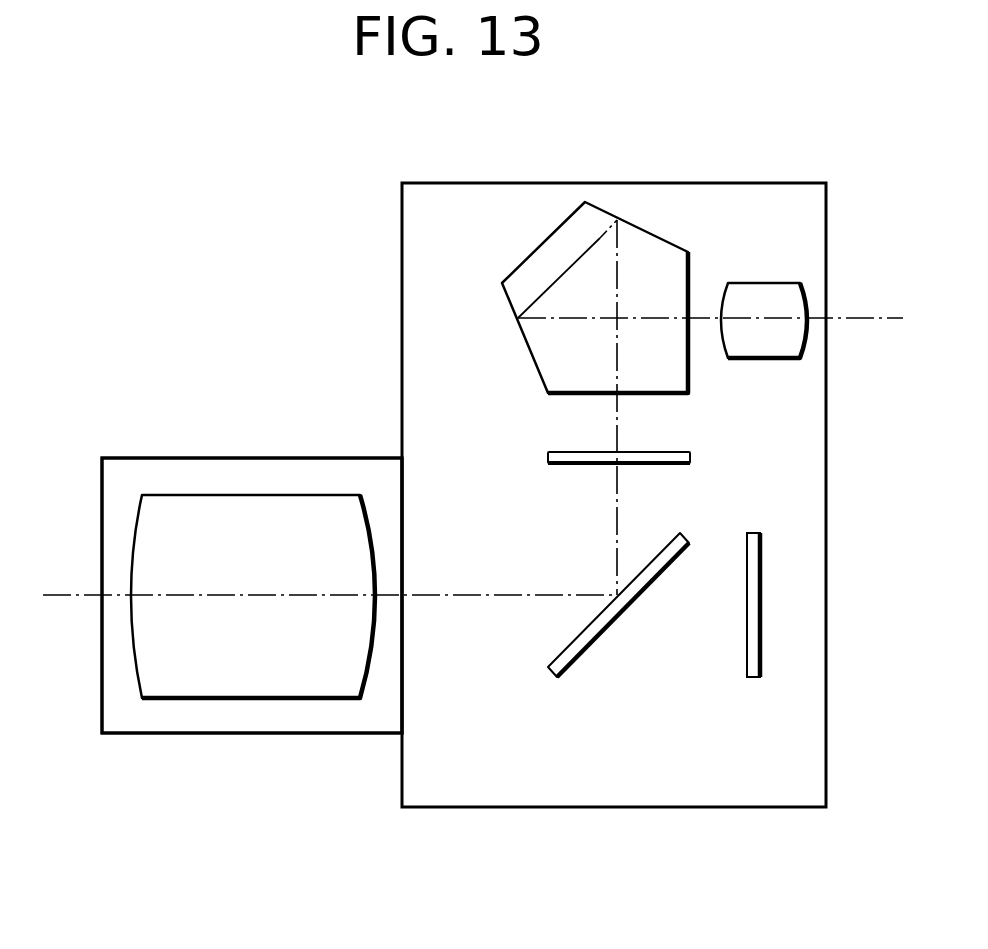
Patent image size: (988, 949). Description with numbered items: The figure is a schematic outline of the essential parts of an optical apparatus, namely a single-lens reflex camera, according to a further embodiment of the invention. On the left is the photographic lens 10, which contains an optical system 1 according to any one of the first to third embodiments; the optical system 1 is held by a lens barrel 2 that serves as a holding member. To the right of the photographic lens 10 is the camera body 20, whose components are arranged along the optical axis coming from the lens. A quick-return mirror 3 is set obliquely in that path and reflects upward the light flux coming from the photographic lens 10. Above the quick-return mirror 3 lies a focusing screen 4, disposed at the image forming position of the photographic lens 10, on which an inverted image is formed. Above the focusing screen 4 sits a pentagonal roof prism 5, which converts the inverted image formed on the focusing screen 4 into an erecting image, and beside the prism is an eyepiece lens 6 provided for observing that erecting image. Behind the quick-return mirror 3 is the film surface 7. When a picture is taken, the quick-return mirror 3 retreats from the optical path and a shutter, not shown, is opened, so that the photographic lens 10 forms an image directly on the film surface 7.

The optical system 1 is at (135, 522).
The lens barrel 2 is at (275, 458).
The quick-return mirror 3 is at (577, 662).
The focusing screen 4 is at (692, 458).
The pentagonal roof prism 5 is at (535, 248).
The eyepiece lens 6 is at (748, 283).
The film surface 7 is at (745, 665).
The photographic lens 10 is at (166, 442).
The camera body 20 is at (693, 163).